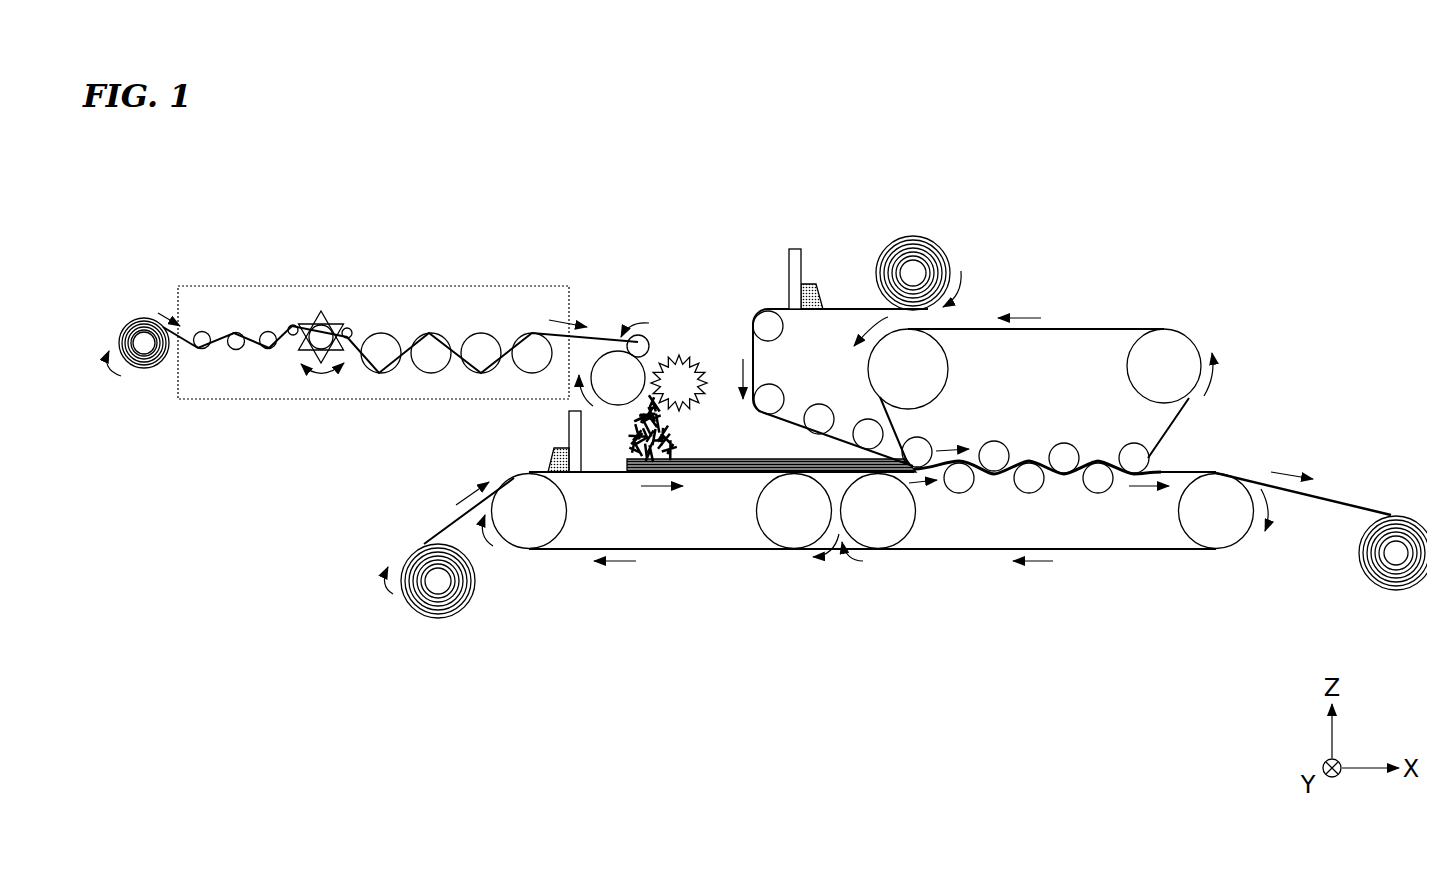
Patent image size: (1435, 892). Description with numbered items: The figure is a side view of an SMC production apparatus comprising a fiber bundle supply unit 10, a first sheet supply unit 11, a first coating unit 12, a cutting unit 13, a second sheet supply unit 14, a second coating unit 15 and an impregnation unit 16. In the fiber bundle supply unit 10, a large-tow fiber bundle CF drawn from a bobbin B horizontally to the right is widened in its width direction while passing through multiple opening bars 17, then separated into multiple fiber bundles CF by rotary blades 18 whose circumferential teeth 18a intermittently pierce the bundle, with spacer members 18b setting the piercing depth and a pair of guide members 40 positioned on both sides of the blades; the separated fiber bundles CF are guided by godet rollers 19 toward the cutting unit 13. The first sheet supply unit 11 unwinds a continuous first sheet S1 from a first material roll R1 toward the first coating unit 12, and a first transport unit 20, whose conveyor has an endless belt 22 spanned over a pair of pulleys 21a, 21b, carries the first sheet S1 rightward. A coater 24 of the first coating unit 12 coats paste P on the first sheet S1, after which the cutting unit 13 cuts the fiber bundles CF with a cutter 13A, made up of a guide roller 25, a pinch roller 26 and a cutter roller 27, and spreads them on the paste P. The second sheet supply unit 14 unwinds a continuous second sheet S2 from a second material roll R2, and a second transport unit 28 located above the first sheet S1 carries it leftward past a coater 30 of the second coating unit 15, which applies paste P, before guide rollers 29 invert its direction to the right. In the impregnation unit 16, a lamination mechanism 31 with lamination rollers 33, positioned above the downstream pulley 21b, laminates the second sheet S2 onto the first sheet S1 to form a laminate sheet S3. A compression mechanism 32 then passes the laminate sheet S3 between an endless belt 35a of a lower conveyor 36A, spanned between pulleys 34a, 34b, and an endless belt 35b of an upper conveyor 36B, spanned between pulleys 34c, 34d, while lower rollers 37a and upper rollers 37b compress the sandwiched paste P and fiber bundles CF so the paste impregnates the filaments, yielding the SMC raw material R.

The fiber bundle supply unit 10 is at (490, 283).
The first sheet supply unit 11 is at (412, 570).
The first coating unit 12 is at (645, 366).
The cutting unit 13 is at (662, 344).
The cutter 13A is at (657, 333).
The second sheet supply unit 14 is at (937, 250).
The second coating unit 15 is at (835, 292).
The impregnation unit 16 is at (1035, 440).
The opening bars 17 is at (237, 333).
The rotary blades 18 is at (316, 296).
The teeth 18a is at (324, 318).
The spacer members 18b is at (303, 322).
The godet rollers 19 is at (432, 340).
The first transport unit 20 is at (849, 592).
The pulley 21a is at (523, 530).
The downstream-side pulley 21b is at (788, 530).
The endless belt 22 is at (733, 550).
The coater 24 is at (568, 425).
The guide roller 25 is at (612, 399).
The pinch roller 26 is at (635, 343).
The cutter roller 27 is at (677, 339).
The second transport unit 28 is at (763, 296).
The guide rollers 29 is at (775, 328).
The coater 30 is at (802, 265).
The lamination mechanism 31 is at (790, 445).
The compression mechanism 32 is at (1081, 463).
The lamination rollers 33 is at (865, 427).
The pulley 34a is at (870, 530).
The pulley 34b is at (1235, 530).
The pulley 34c is at (938, 367).
The pulley 34d is at (1183, 350).
The endless belt 35a is at (1100, 550).
The endless belt 35b is at (1077, 326).
The lower conveyor 36A is at (1081, 573).
The upper conveyor 36B is at (1138, 308).
The lower rollers 37a is at (1030, 482).
The upper rollers 37b is at (1063, 450).
The guide members 40 is at (288, 328).
The bobbin B is at (133, 317).
The fiber bundle CF is at (362, 345).
The paste P is at (548, 462).
The raw material R is at (1330, 496).
The first material roll R1 is at (413, 612).
The second material roll R2 is at (948, 265).
The first sheet S1 is at (455, 520).
The second sheet S2 is at (857, 305).
The laminate sheet S3 is at (1022, 460).